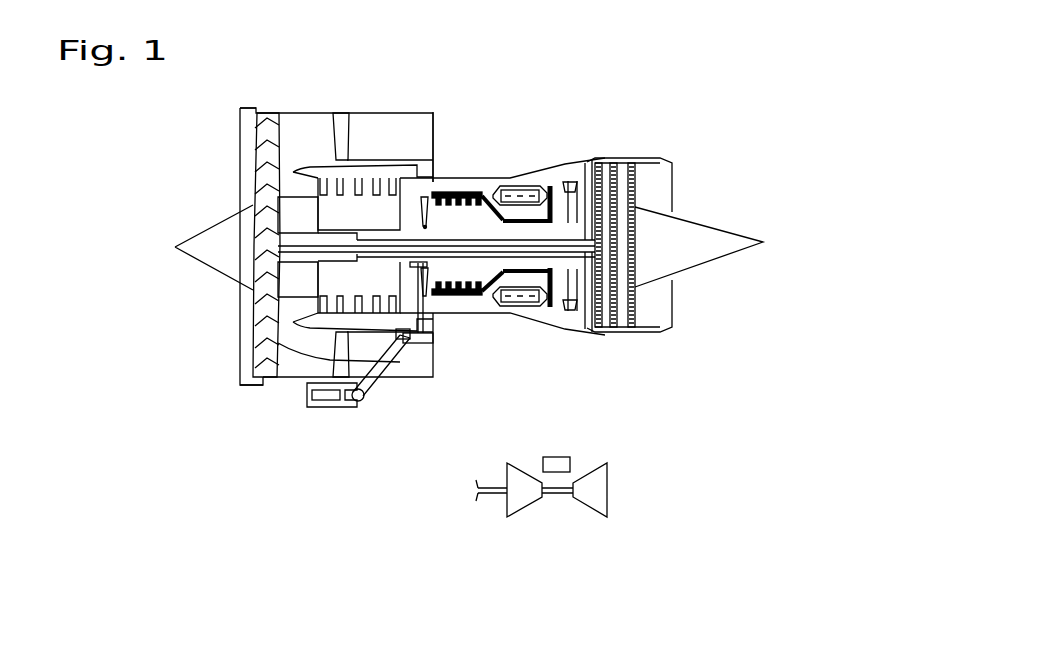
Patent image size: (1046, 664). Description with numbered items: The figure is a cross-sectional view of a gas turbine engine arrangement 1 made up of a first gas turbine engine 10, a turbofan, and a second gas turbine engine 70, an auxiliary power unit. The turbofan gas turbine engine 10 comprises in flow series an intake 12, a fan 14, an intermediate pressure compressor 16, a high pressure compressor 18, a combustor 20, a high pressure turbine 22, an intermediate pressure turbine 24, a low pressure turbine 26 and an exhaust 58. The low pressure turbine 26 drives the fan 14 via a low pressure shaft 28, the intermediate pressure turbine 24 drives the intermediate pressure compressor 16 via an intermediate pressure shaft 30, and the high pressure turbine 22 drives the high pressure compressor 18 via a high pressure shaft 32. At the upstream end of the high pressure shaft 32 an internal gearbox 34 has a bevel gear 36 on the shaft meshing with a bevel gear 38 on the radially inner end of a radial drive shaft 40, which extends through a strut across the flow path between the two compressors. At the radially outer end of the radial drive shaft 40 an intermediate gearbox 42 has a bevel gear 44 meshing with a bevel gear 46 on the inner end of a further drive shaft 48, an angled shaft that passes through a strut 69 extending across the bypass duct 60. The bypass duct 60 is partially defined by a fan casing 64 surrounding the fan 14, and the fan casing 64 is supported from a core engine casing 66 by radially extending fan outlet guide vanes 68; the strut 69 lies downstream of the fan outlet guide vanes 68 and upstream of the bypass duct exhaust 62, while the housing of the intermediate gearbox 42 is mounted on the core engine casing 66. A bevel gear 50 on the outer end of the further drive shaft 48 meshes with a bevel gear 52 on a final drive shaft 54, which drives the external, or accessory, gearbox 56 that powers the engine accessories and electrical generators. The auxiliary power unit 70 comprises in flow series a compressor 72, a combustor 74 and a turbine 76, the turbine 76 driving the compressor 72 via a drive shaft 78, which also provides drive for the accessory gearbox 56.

The gas turbine engine arrangement 1 is at (705, 128).
The first gas turbine engine 10 is at (458, 101).
The intake 12 is at (238, 342).
The fan 14 is at (283, 128).
The intermediate pressure compressor 16 is at (358, 200).
The high pressure compressor 18 is at (466, 196).
The combustor 20 is at (526, 186).
The high pressure turbine 22 is at (552, 309).
The intermediate pressure turbine 24 is at (588, 166).
The low pressure turbine 26 is at (637, 186).
The low pressure shaft 28 is at (592, 246).
The intermediate pressure shaft 30 is at (571, 181).
The high pressure shaft 32 is at (511, 301).
The internal gearbox 34 is at (427, 295).
The bevel gear 36 is at (426, 225).
The bevel gear 38 is at (357, 252).
The radial drive shaft 40 is at (417, 283).
The intermediate gearbox 42 is at (425, 348).
The bevel gear 44 is at (425, 287).
The bevel gear 46 is at (403, 345).
The further drive shaft 48 is at (388, 378).
The bevel gear 50 is at (372, 403).
The bevel gear 52 is at (350, 404).
The final drive shaft 54 is at (327, 401).
The external gearbox 56 is at (298, 402).
The exhaust 58 is at (665, 301).
The bypass duct 60 is at (388, 152).
The bypass duct exhaust 62 is at (434, 123).
The fan casing 64 is at (256, 108).
The core engine casing 66 is at (623, 333).
The fan outlet guide vanes 68 is at (337, 158).
The strut 69 is at (280, 393).
The second gas turbine engine 70 is at (578, 515).
The compressor 72 is at (523, 493).
The combustor 74 is at (572, 462).
The turbine 76 is at (593, 500).
The drive shaft 78 is at (490, 497).